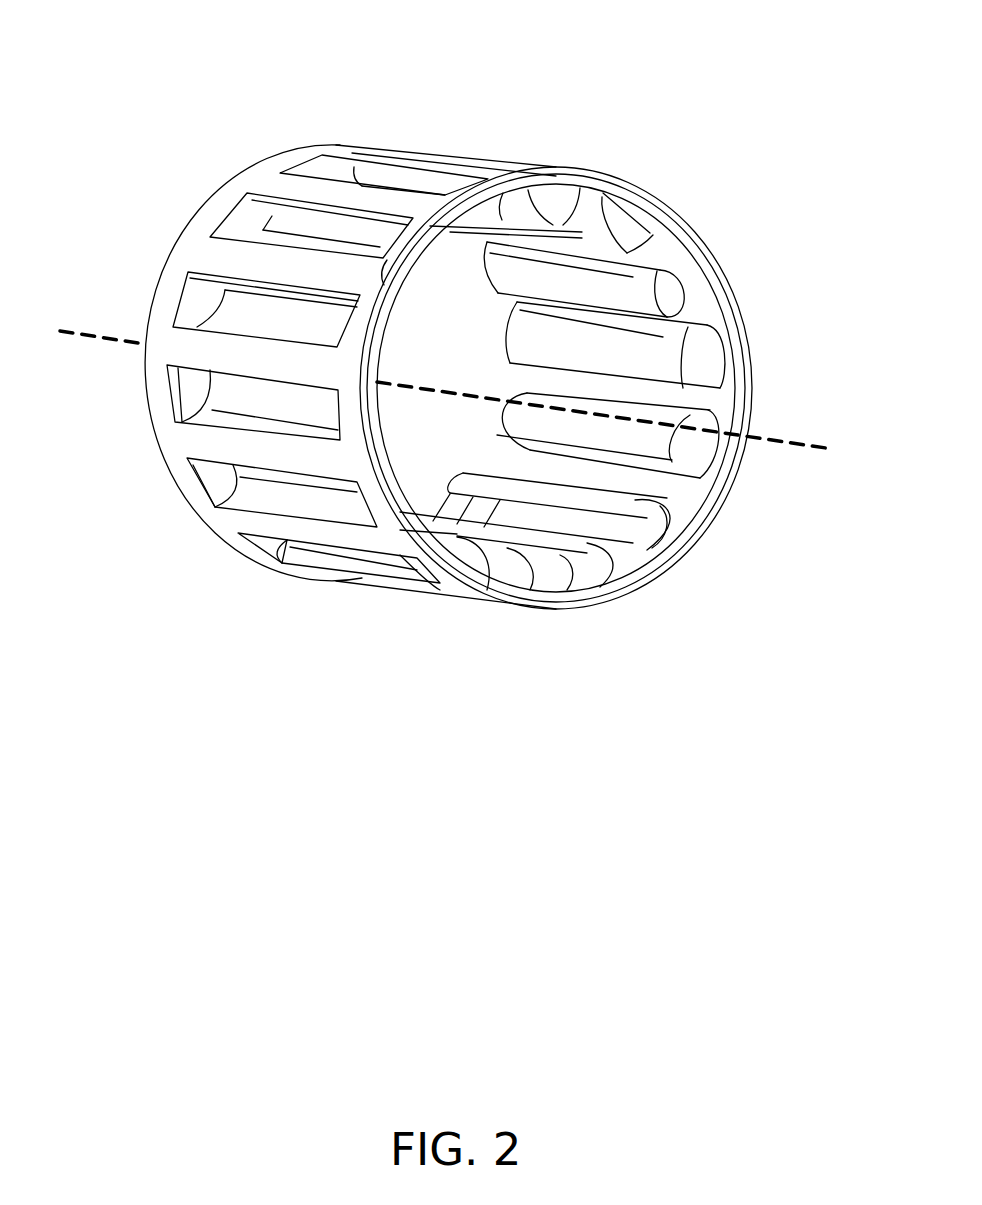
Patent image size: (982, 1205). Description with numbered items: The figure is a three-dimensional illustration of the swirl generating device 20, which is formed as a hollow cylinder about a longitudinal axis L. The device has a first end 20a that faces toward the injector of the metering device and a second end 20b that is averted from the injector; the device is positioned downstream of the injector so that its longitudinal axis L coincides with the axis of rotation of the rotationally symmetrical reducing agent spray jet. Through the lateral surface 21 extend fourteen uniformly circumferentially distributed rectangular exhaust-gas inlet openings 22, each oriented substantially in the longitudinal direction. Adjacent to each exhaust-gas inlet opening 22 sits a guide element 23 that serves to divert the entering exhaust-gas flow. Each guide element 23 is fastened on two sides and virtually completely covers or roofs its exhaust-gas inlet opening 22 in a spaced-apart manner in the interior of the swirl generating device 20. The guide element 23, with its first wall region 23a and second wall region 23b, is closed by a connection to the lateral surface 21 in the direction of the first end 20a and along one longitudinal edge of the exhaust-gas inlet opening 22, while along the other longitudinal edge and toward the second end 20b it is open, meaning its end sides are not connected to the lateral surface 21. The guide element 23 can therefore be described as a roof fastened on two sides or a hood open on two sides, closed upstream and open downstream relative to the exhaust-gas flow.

The swirl generating device 20 is at (489, 376).
The first end of the swirl generating device 20a is at (478, 636).
The second end of the swirl generating device 20b is at (288, 616).
The lateral surface 21 is at (335, 192).
The exhaust-gas inlet opening 22 is at (245, 217).
The guide element 23 is at (541, 339).
The first wall region of the guide element 23a is at (517, 484).
The second wall region of the guide element 23b is at (652, 507).
The longitudinal axis L is at (775, 446).